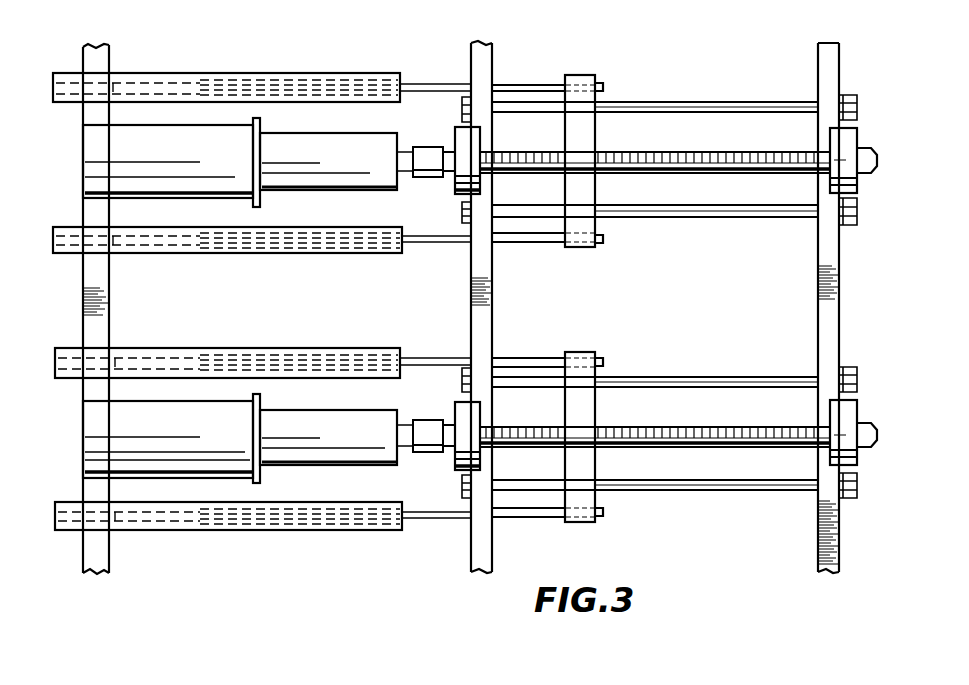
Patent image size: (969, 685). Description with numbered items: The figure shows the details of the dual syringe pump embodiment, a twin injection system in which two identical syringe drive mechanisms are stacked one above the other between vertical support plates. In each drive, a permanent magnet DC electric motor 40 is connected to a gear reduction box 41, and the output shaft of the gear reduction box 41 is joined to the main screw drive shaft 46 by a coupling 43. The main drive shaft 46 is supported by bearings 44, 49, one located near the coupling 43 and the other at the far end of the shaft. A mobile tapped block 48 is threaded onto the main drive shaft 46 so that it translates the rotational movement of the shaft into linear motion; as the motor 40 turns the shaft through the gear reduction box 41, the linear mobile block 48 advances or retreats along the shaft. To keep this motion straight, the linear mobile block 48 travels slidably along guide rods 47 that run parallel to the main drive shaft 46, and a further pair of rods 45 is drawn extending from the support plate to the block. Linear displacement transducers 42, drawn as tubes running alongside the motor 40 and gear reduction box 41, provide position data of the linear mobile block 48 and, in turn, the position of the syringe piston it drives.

The permanent magnet DC electric motor 40 is at (122, 142).
The gear reduction box 41 is at (352, 165).
The linear displacement transducer 42 is at (305, 74).
The coupling 43 is at (433, 155).
The bearing 44 is at (472, 152).
The guide rod 45 is at (528, 83).
The main screw drive shaft 46 is at (752, 152).
The guide rod 47 is at (672, 110).
The mobile tapped block 48 is at (585, 85).
The bearing 49 is at (847, 148).